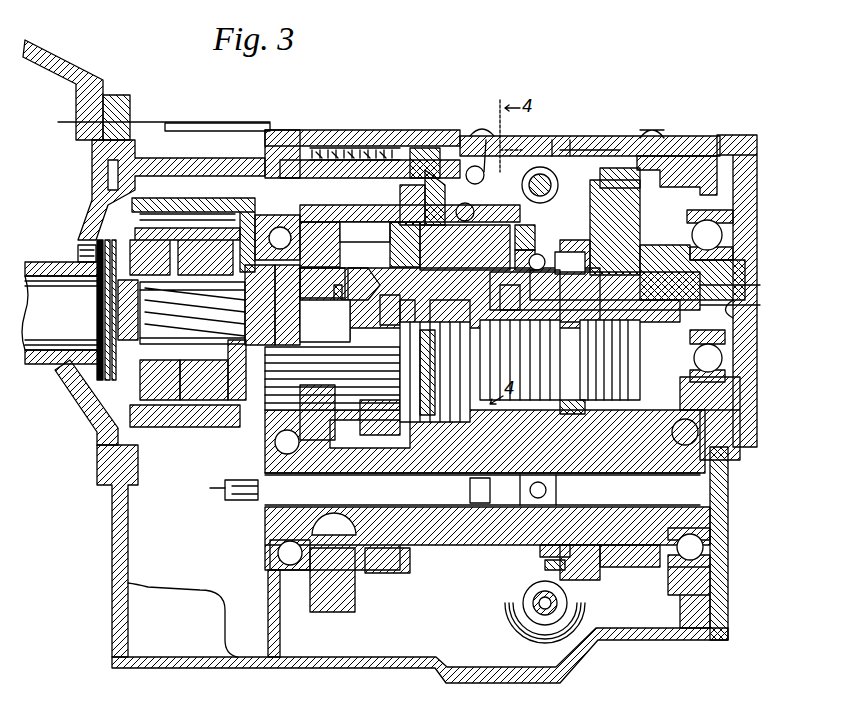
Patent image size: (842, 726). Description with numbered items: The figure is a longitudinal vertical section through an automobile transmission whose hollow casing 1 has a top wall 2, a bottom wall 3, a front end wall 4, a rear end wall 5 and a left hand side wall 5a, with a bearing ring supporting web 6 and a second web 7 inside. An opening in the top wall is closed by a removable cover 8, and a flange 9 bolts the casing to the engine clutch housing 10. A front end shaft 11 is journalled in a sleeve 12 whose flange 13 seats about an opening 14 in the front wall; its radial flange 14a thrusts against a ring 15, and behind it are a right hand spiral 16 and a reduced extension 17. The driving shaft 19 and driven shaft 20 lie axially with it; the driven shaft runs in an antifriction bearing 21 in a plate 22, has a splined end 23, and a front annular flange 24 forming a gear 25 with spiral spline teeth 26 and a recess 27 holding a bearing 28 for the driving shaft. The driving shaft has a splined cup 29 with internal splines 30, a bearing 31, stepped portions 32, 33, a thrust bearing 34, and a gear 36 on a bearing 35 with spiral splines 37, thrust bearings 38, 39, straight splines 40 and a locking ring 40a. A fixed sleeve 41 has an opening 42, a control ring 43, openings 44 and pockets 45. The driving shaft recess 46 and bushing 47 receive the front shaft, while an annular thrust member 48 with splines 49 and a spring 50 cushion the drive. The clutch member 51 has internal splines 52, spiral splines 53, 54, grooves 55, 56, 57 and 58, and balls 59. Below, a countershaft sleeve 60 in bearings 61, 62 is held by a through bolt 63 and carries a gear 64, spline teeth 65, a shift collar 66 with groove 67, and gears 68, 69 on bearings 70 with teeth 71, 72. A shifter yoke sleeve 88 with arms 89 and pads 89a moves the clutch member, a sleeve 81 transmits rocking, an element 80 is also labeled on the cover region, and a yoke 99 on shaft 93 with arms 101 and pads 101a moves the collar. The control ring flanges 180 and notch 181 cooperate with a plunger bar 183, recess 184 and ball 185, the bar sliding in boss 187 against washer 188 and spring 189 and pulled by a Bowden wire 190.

The hollow casing 1 is at (92, 606).
The top wall 2 is at (212, 164).
The bottom wall 3 is at (282, 664).
The front end wall 4 is at (112, 538).
The rear end wall 5 is at (728, 520).
The left hand side wall 5a is at (365, 618).
The bearing ring supporting web 6 is at (268, 594).
The web 7 is at (440, 148).
The removable cover 8 is at (612, 140).
The flange 9 is at (128, 98).
The clutch housing 10 is at (70, 72).
The front end shaft 11 is at (61, 313).
The sleeve 12 is at (60, 262).
The flange 13 is at (92, 178).
The opening 14 is at (98, 285).
The radial flange 14a is at (105, 316).
The ring 15 is at (80, 385).
The right hand spiral 16 is at (148, 300).
The reduced extension 17 is at (284, 305).
The driving shaft 19 is at (355, 303).
The driven shaft 20 is at (758, 276).
The antifriction bearing 21 is at (722, 232).
The plate 22 is at (737, 291).
The splined rear end 23 is at (757, 306).
The annular flange 24 is at (588, 266).
The gear 25 is at (628, 178).
The spiral spline teeth 26 is at (575, 237).
The stepped down recess 27 is at (645, 250).
The antifriction bearing 28 is at (694, 305).
The cup 29 is at (172, 420).
The internal splines 30 is at (162, 428).
The antifriction bearing 31 is at (277, 237).
The stepped down portion 32 is at (322, 283).
The stepped down portion 33 is at (450, 305).
The combined radial and thrust bearing 34 is at (510, 296).
The antifriction bearing 35 is at (343, 307).
The gear 36 is at (350, 222).
The spiral splines 37 is at (388, 222).
The thrust bearing 38 is at (320, 226).
The thrust bearing 39 is at (366, 284).
The spline teeth 40 is at (394, 305).
The locking ring 40a is at (416, 308).
The sleeve 41 is at (352, 205).
The opening 42 is at (322, 385).
The control ring 43 is at (439, 372).
The openings 44 is at (471, 210).
The pockets 45 is at (482, 183).
The axial recess 46 is at (325, 321).
The bearing bushing 47 is at (260, 305).
The annular thrust member 48 is at (232, 420).
The external splines 49 is at (200, 428).
The spring 50 is at (138, 395).
The clutch member 51 is at (465, 247).
The internal splines 52 is at (450, 298).
The spiral splines 53 is at (410, 205).
The spiral splines 54 is at (545, 285).
The external groove 55 is at (430, 180).
The external groove 56 is at (515, 237).
The intermediate groove 57 is at (515, 260).
The external groove 58 is at (560, 398).
The balls 59 is at (532, 183).
The countershaft sleeve 60 is at (448, 530).
The antifriction bearing 61 is at (272, 562).
The antifriction bearing 62 is at (704, 547).
The through bolt 63 is at (222, 505).
The gear 64 is at (323, 584).
The spline teeth 65 is at (540, 555).
The shift collar 66 is at (540, 580).
The external groove 67 is at (576, 578).
The gear 68 is at (402, 580).
The gear 69 is at (620, 572).
The antifriction bearings 70 is at (405, 478).
The spline teeth 71 is at (476, 478).
The spline teeth 72 is at (572, 412).
The bolt 80 is at (640, 134).
The sleeve 81 is at (552, 140).
The sleeve 88 is at (570, 140).
The depending arms 89 is at (605, 222).
The pad 89a is at (620, 311).
The shaft 93 is at (568, 608).
The yoke 99 is at (585, 620).
The arms 101 is at (522, 612).
The pad 101a is at (548, 490).
The flanges 180 is at (560, 150).
The notch 181 is at (482, 134).
The plunger bar 183 is at (312, 140).
The recess 184 is at (500, 100).
The ball 185 is at (486, 138).
The boss 187 is at (300, 134).
The washer 188 is at (406, 134).
The spring 189 is at (380, 134).
The Bowden wire 190 is at (148, 124).